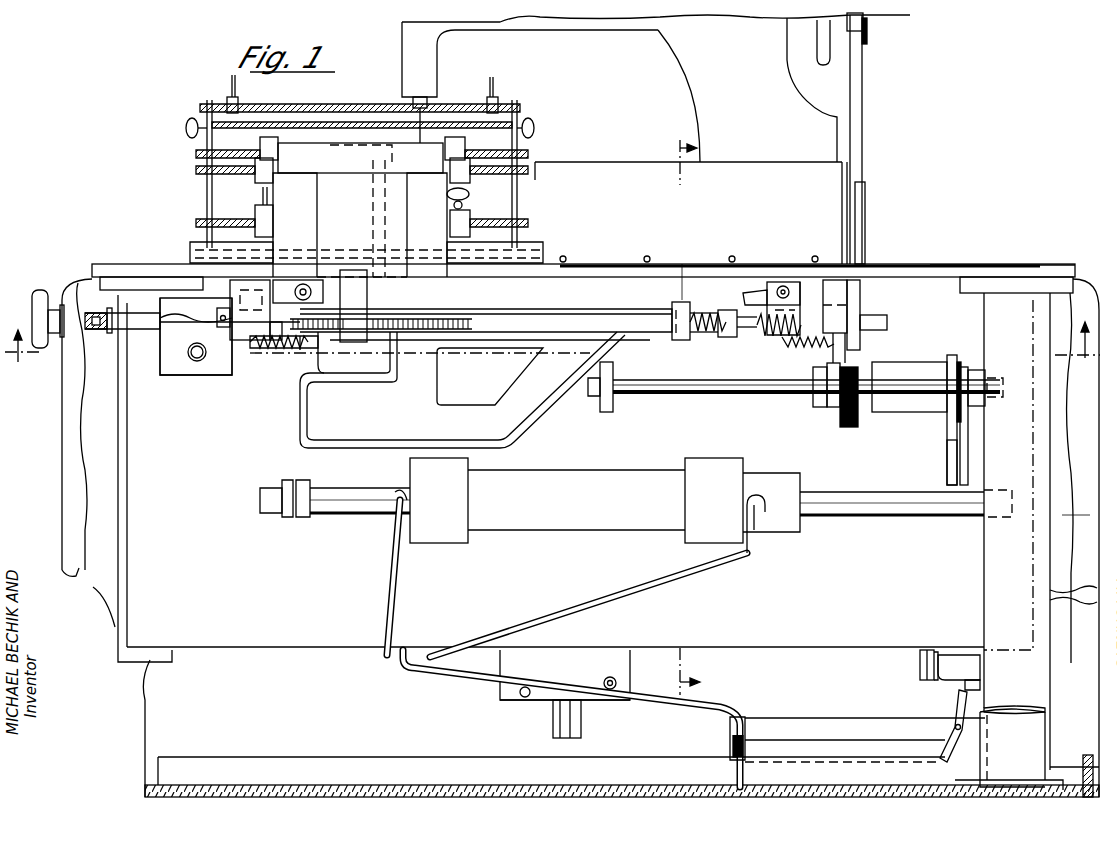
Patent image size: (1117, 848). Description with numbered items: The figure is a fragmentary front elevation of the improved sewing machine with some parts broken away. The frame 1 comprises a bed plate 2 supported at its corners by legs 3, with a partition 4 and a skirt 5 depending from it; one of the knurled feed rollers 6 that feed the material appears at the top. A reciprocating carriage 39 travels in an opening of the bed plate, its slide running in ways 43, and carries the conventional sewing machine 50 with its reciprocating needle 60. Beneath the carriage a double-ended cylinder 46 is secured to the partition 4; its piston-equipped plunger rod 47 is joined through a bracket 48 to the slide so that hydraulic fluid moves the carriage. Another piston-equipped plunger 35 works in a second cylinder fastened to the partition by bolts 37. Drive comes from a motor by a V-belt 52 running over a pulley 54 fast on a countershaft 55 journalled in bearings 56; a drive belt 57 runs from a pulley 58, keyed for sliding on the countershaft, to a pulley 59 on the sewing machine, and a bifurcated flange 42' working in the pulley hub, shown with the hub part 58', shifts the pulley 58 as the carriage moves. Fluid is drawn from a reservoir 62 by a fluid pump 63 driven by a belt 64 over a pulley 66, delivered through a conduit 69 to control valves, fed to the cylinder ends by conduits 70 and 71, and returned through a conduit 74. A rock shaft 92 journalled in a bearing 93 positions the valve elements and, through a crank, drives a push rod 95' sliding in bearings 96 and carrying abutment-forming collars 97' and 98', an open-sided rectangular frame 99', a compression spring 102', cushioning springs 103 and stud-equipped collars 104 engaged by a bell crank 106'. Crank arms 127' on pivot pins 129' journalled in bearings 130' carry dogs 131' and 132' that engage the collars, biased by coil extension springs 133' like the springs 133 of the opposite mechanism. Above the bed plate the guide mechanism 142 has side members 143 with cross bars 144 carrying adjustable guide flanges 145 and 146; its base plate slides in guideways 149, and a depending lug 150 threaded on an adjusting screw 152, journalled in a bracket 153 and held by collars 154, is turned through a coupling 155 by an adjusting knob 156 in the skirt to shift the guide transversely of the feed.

The frame 1 is at (140, 693).
The bed plate 2 is at (935, 266).
The legs 3 is at (160, 663).
The partition 4 is at (200, 541).
The skirt 5 is at (552, 464).
The feed roller 6 is at (687, 409).
The piston-equipped plunger 35 is at (585, 730).
The bolts 37 is at (610, 678).
The reciprocating carriage 39 is at (772, 213).
The bifurcated flange 42' is at (806, 402).
The ways 43 is at (575, 303).
The double-ended cylinder 46 is at (592, 511).
The piston-equipped plunger rod 47 is at (330, 520).
The bracket 48 is at (317, 428).
The sewing machine 50 is at (742, 56).
The V-belt 52 is at (947, 452).
The pulley 54 is at (965, 405).
The countershaft 55 is at (730, 392).
The bearings 56 is at (606, 408).
The drive belt 57 is at (866, 103).
The pulley 58 is at (833, 391).
The hub 58' is at (798, 399).
The pulley 59 is at (872, 40).
The sewing needle 60 is at (415, 130).
The reservoir 62 is at (728, 745).
The fluid pump 63 is at (958, 670).
The belt 64 is at (920, 666).
The pulley 66 is at (918, 672).
The conduit 69 is at (972, 706).
The conduit 70 is at (645, 593).
The conduit 71 is at (385, 605).
The conduit 74 is at (440, 678).
The rock shaft 92 is at (190, 362).
The bearing 93 is at (168, 360).
The push rod 95' is at (899, 317).
The bearings 96 is at (850, 310).
The abutment-forming collar 97' is at (301, 355).
The abutment-forming collar 98' is at (703, 344).
The open-sided rectangular frame 99' is at (416, 324).
The compression spring 102' is at (688, 343).
The cushioning springs 103 is at (770, 337).
The stud-equipped collar 104 is at (672, 340).
The bell crank 106' is at (688, 272).
The crank arm 127' is at (420, 367).
The pivot pins 129' is at (772, 269).
The bearings 130' is at (797, 284).
The dog 131' is at (353, 292).
The dog 132' is at (732, 295).
The coil extension springs 133 is at (280, 366).
The coil extension springs 133' is at (802, 356).
The guide mechanism 142 is at (205, 195).
The side members 143 is at (205, 205).
The cross bars 144 is at (238, 220).
The guide flange 145 is at (360, 158).
The guide flange 146 is at (360, 218).
The guideways 149 is at (192, 244).
The depending lug 150 is at (355, 340).
The adjusting screw 152 is at (178, 322).
The bracket 153 is at (248, 345).
The collars 154 is at (220, 316).
The coupling 155 is at (115, 335).
The adjusting knob 156 is at (35, 292).